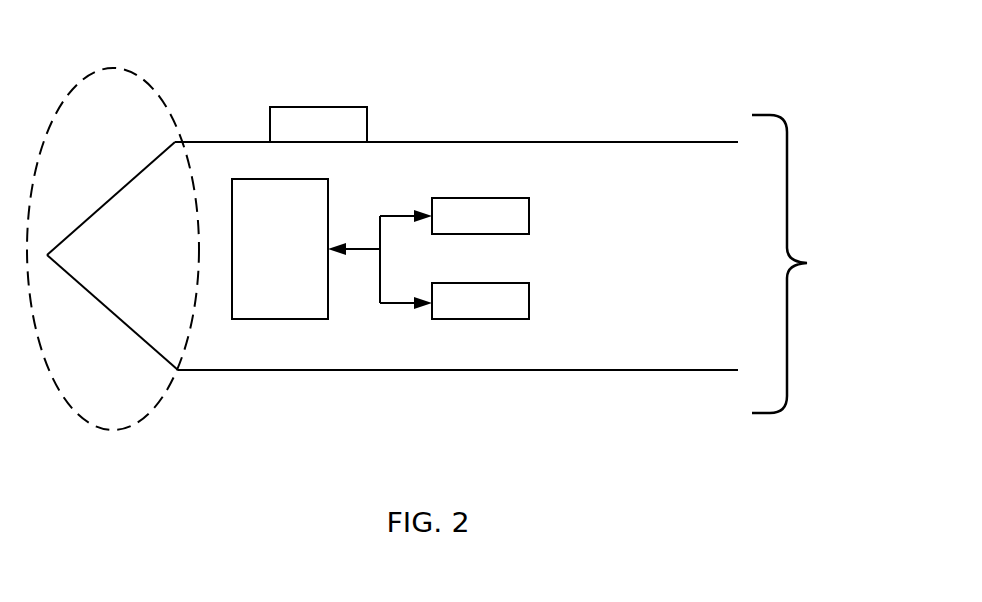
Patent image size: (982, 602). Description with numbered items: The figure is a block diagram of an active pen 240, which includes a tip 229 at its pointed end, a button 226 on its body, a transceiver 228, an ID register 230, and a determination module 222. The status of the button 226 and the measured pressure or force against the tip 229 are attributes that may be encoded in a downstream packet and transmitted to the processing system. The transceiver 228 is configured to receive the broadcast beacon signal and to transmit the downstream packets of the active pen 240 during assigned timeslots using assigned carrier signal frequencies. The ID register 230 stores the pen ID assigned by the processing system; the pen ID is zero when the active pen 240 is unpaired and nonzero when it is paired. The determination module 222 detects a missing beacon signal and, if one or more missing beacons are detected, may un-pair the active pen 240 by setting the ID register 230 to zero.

The determination module 222 is at (463, 301).
The button 226 is at (318, 120).
The transceiver 228 is at (301, 230).
The tip 229 is at (125, 70).
The ID register 230 is at (463, 214).
The active pen 240 is at (474, 264).